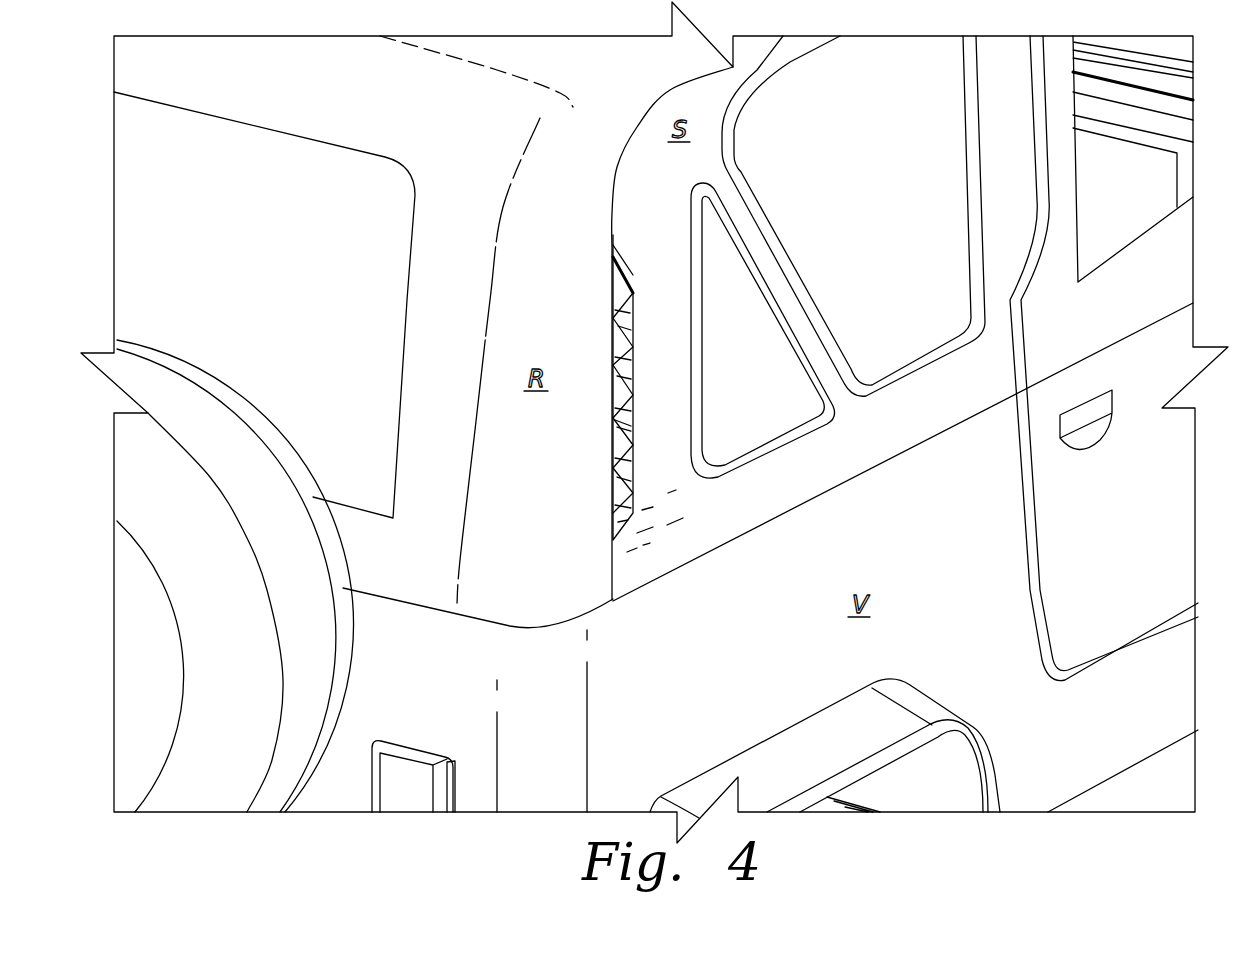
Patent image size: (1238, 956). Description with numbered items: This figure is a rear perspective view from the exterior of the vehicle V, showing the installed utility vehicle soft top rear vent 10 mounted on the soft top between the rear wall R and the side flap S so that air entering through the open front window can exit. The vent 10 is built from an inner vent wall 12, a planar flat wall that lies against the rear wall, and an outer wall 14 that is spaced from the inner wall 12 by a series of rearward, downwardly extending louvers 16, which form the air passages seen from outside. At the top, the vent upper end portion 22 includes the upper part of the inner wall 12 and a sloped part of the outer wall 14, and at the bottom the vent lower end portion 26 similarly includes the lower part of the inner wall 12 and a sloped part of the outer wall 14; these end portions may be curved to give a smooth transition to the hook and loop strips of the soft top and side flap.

The utility vehicle soft top rear vent 10 is at (628, 354).
The inner vent wall 12 is at (618, 470).
The outer wall 14 is at (620, 425).
The louvers 16 is at (634, 306).
The vent upper end portion 22 is at (642, 245).
The vent lower end portion 26 is at (640, 528).